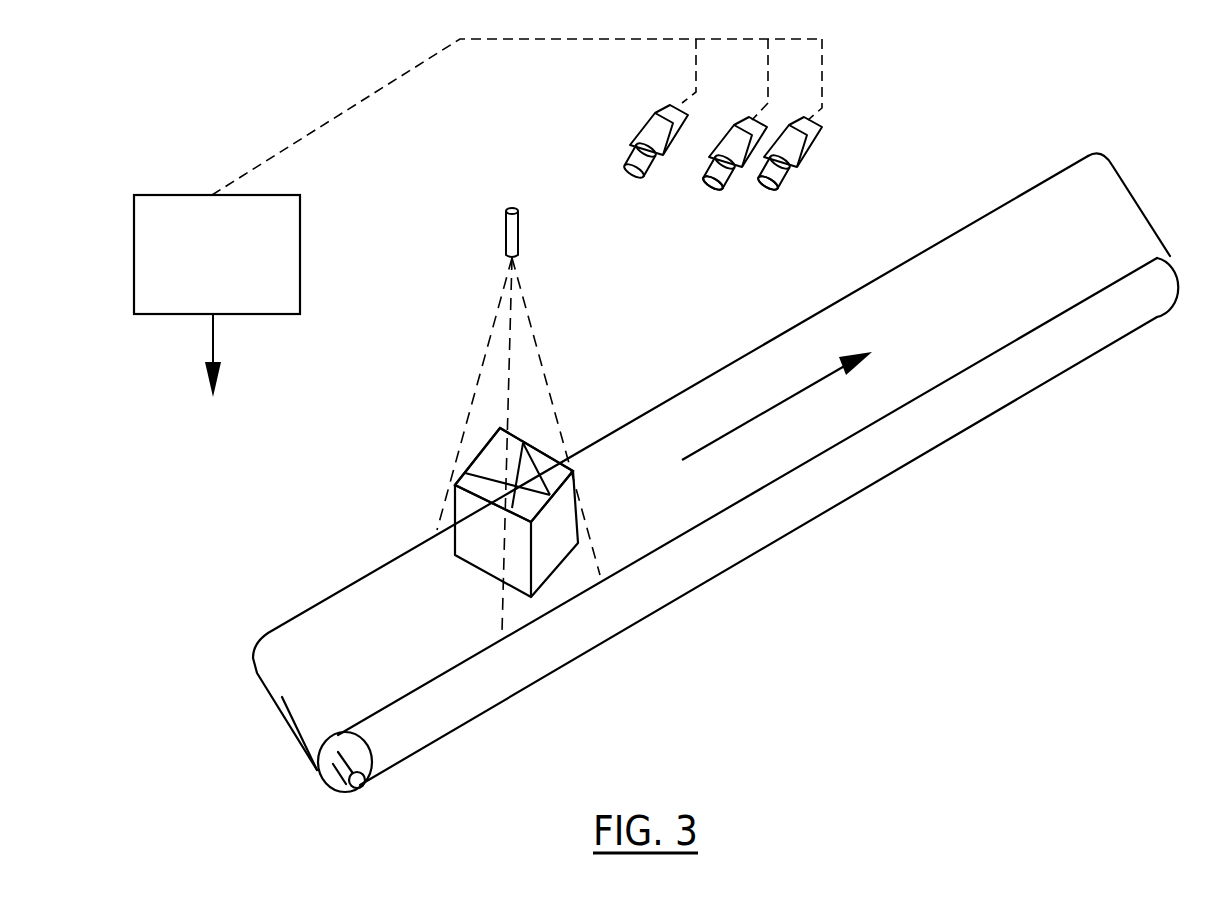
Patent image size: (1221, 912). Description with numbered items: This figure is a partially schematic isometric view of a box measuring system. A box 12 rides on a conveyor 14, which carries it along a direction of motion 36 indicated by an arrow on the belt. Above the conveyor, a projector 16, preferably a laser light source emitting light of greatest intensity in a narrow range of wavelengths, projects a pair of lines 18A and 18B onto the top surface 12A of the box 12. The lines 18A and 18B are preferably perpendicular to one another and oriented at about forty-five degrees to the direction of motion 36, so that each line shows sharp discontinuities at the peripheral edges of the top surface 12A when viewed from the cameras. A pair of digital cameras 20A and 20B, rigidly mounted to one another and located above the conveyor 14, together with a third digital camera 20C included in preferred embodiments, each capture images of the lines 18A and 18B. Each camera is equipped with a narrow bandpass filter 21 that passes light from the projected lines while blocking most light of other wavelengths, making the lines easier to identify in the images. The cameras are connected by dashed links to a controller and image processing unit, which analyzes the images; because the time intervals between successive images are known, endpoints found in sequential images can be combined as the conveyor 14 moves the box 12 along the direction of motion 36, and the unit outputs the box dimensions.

The box 12 is at (537, 577).
The top surface 12A is at (467, 480).
The conveyor 14 is at (1060, 182).
The projector 16 is at (513, 240).
The line 18A is at (543, 447).
The line 18B is at (563, 455).
The digital camera 20A is at (733, 130).
The digital camera 20B is at (802, 137).
The third digital camera 20C is at (652, 121).
The narrow bandpass filter 21 is at (700, 190).
The direction of motion 36 is at (278, 226).